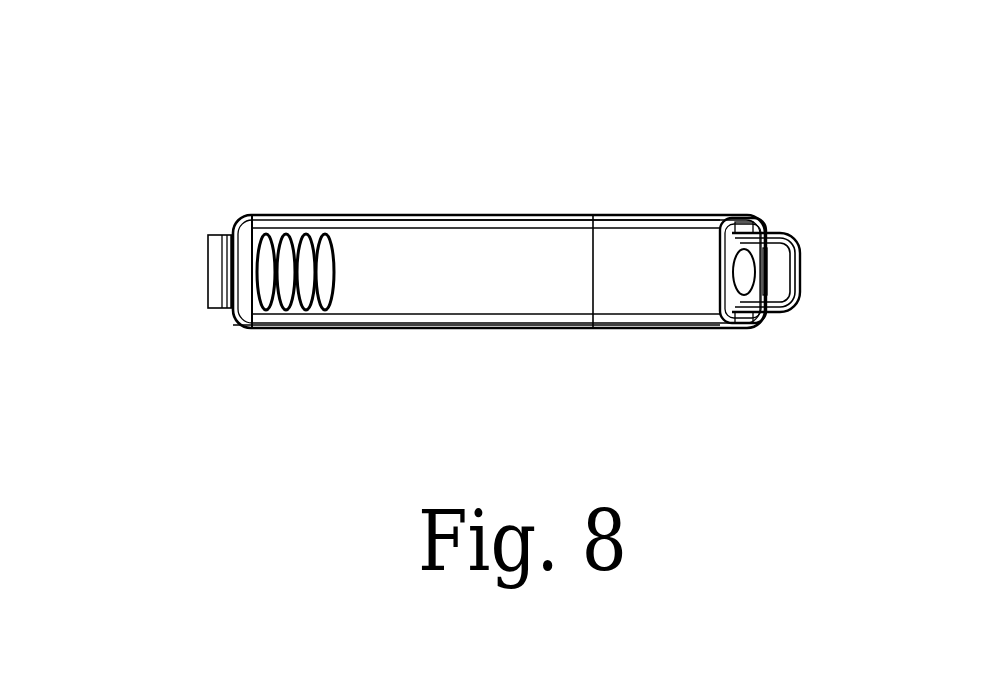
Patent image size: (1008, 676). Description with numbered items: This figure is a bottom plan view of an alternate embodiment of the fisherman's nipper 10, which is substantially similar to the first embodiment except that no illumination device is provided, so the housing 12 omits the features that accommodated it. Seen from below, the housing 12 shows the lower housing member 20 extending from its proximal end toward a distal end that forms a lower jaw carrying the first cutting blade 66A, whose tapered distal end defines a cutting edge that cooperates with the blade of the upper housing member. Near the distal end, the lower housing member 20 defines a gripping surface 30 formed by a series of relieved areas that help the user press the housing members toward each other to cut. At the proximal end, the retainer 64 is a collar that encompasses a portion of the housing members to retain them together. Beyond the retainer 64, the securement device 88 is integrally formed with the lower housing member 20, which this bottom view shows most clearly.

The nipper 10 is at (158, 118).
The housing 12 is at (508, 207).
The lower housing member 20 is at (462, 288).
The gripping surface 30 is at (286, 233).
The retainer 64 is at (650, 295).
The first cutting blade 66A is at (212, 290).
The securement device 88 is at (793, 238).